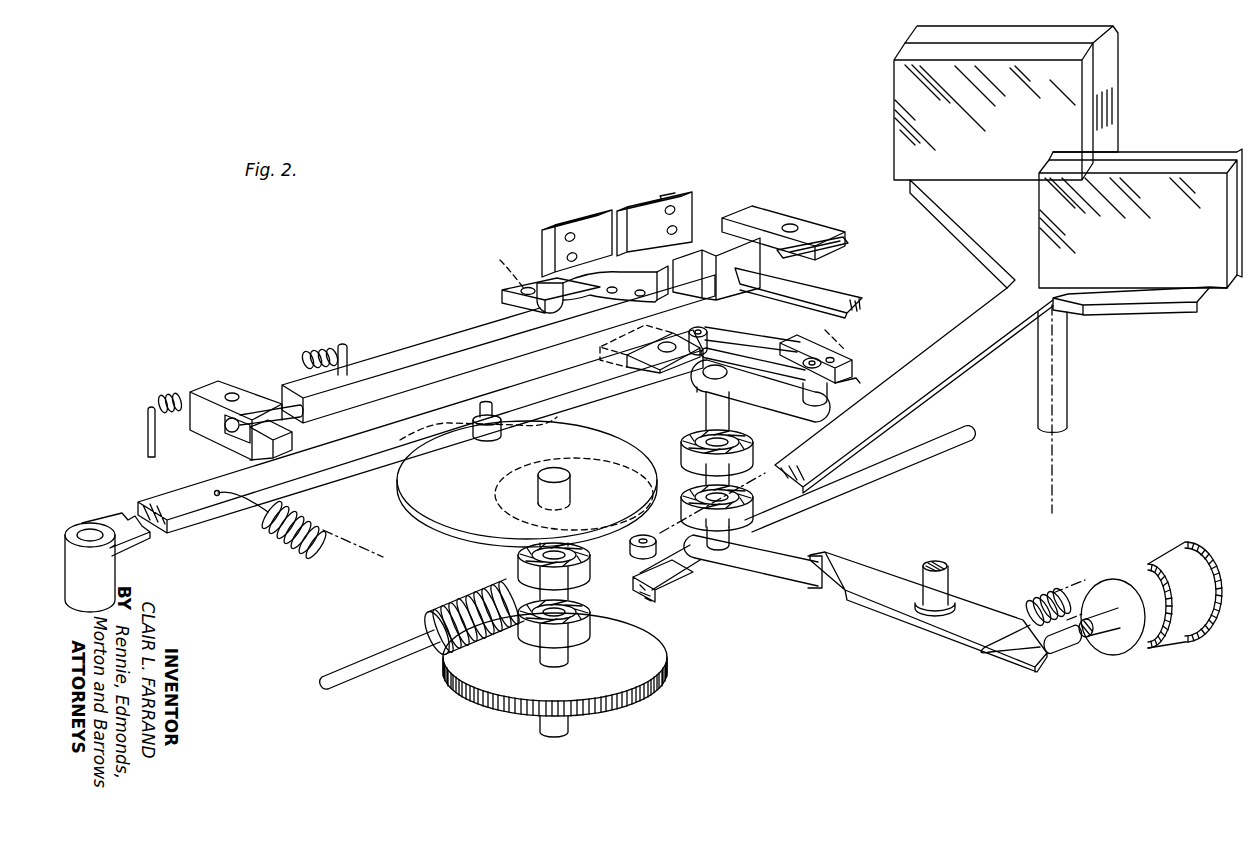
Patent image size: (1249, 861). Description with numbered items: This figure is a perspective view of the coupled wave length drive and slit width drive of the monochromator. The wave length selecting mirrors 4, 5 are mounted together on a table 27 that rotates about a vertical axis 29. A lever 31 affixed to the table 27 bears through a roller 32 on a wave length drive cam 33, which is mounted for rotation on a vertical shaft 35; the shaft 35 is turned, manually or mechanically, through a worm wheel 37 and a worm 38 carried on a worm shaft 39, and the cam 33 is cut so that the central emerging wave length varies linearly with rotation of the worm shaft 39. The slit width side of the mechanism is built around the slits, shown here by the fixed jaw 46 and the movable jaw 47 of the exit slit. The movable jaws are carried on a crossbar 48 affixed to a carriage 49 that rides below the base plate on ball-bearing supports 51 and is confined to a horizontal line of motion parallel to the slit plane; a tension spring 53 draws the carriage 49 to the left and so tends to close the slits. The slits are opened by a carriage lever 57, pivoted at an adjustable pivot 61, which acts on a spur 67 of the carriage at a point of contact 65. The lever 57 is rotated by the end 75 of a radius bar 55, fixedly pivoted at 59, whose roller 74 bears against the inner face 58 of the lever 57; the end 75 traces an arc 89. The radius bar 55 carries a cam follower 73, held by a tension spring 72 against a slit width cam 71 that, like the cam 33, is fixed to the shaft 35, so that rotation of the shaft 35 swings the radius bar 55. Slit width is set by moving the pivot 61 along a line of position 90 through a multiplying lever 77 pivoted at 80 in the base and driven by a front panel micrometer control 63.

The wave length selecting mirror 4 is at (1213, 290).
The wave length selecting mirror 5 is at (893, 68).
The table 27 is at (1148, 312).
The vertical axis 29 is at (1070, 432).
The lever 31 is at (962, 372).
The roller 32 is at (640, 580).
The wave length drive cam 33 is at (648, 535).
The vertical shaft 35 is at (572, 728).
The worm wheel 37 is at (668, 686).
The worm 38 is at (446, 608).
The worm shaft 39 is at (378, 672).
The fixed jaw 46 is at (600, 210).
The movable jaw 47 is at (630, 200).
The crossbar 48 is at (856, 300).
The carriage 49 is at (392, 352).
The ball-bearing supports 51 is at (232, 445).
The tension spring 53 is at (316, 350).
The radius bar 55 is at (600, 388).
The carriage lever 57 is at (760, 334).
The inner face 58 is at (753, 364).
The pivot 59 is at (92, 530).
The pivot 61 is at (822, 360).
The micrometer control 63 is at (1196, 642).
The point of contact 65 is at (549, 274).
The spur 67 is at (640, 282).
The slit width cam 71 is at (598, 440).
The tension spring 72 is at (280, 550).
The cam follower 73 is at (526, 466).
The roller 74 is at (650, 342).
The end of the radius bar 75 is at (705, 328).
The multiplying lever 77 is at (767, 412).
The pivot 80 is at (710, 376).
The arc 89 is at (858, 378).
The line of position 90 is at (825, 333).